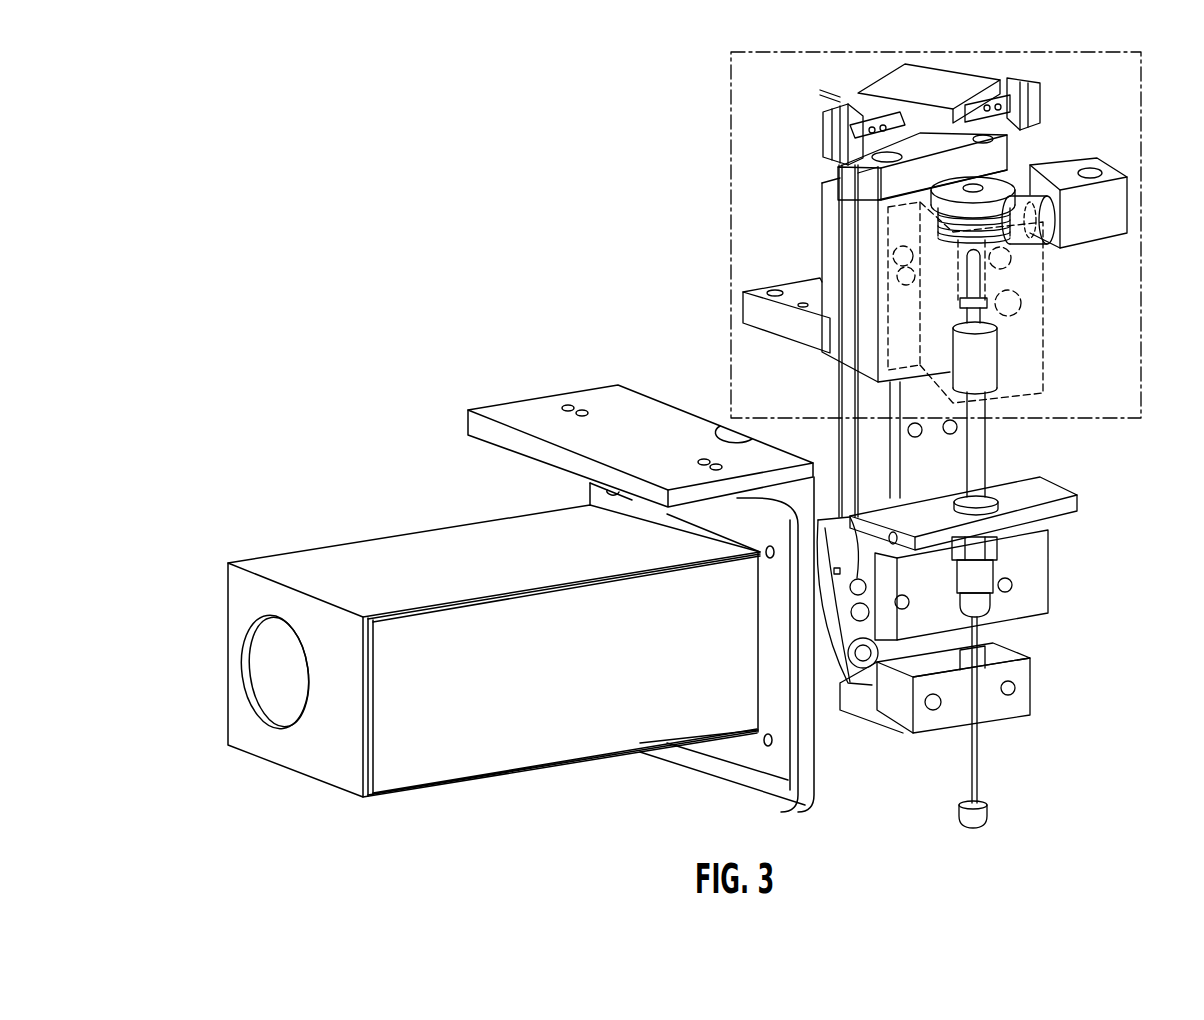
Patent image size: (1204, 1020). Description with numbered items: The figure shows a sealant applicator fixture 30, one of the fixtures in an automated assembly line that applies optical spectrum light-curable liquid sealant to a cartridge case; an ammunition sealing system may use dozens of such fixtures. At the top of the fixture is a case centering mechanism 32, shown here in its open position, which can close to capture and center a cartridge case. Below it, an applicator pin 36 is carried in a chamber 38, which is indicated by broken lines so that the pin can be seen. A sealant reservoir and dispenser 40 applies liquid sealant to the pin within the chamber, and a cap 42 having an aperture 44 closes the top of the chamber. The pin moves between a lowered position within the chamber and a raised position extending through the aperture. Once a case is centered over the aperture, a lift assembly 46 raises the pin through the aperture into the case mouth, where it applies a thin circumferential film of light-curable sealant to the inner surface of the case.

The sealant applicator fixture 30 is at (326, 343).
The case centering mechanism 32 is at (1038, 93).
The applicator pin 36 is at (977, 278).
The chamber 38 is at (1033, 330).
The sealant reservoir and dispenser 40 is at (1052, 222).
The cap 42 is at (1013, 200).
The aperture 44 is at (973, 188).
The lift assembly 46 is at (987, 638).